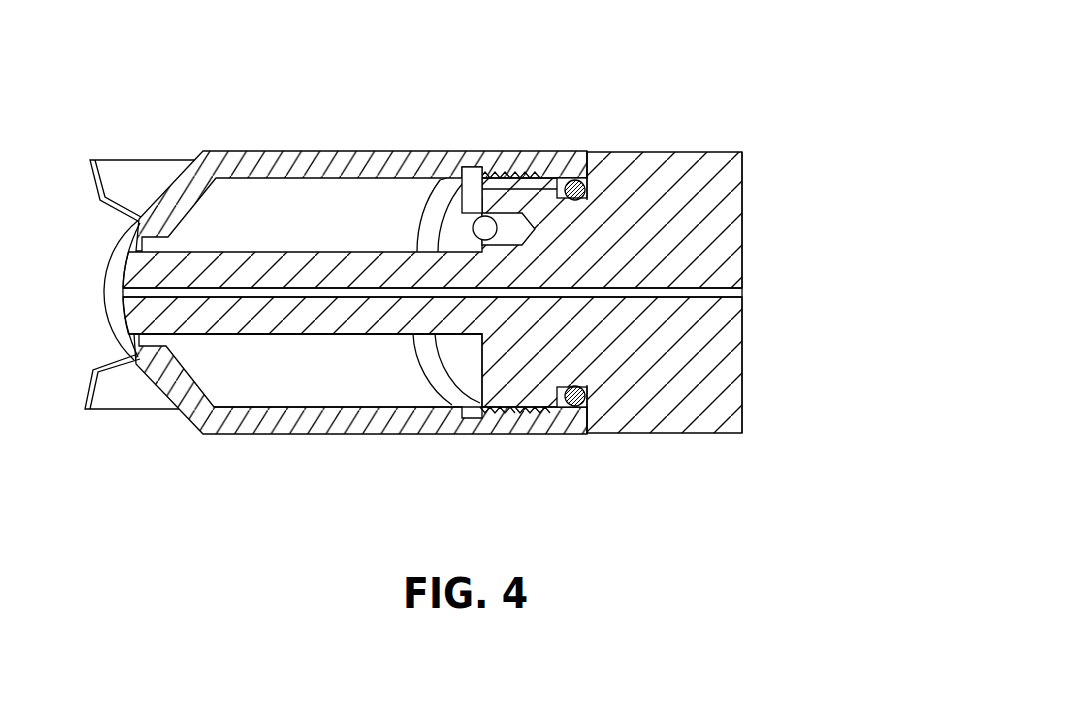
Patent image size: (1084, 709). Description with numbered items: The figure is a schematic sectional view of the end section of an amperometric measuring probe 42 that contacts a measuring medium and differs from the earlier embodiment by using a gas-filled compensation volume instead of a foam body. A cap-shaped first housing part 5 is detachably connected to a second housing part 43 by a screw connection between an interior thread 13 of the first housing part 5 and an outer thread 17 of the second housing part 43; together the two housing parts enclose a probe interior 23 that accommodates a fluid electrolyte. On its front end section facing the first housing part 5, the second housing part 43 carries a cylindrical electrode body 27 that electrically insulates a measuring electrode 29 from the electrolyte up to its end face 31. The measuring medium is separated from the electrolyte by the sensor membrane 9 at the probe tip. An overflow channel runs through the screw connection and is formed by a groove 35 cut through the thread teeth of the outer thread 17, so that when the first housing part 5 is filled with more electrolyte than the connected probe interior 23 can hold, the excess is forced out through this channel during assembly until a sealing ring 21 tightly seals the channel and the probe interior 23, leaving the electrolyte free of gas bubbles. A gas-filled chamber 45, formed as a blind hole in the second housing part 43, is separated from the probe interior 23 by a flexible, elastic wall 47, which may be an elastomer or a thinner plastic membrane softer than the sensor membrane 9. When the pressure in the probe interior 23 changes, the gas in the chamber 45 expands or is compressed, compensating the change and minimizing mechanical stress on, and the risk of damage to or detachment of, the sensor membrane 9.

The first housing part 5 is at (378, 150).
The sensor membrane 9 is at (113, 275).
The end face 31 is at (132, 293).
The measuring electrode 29 is at (244, 297).
The probe interior 23 is at (302, 380).
The cylindrical electrode body 27 is at (386, 308).
The groove 35 is at (542, 178).
The interior thread 13 is at (503, 408).
The outer thread 17 is at (533, 408).
The sealing ring 21 is at (577, 406).
The gas-filled chamber 45 is at (503, 228).
The flexible wall 47 is at (471, 167).
The second housing part 43 is at (712, 263).
The measuring probe 42 is at (672, 113).